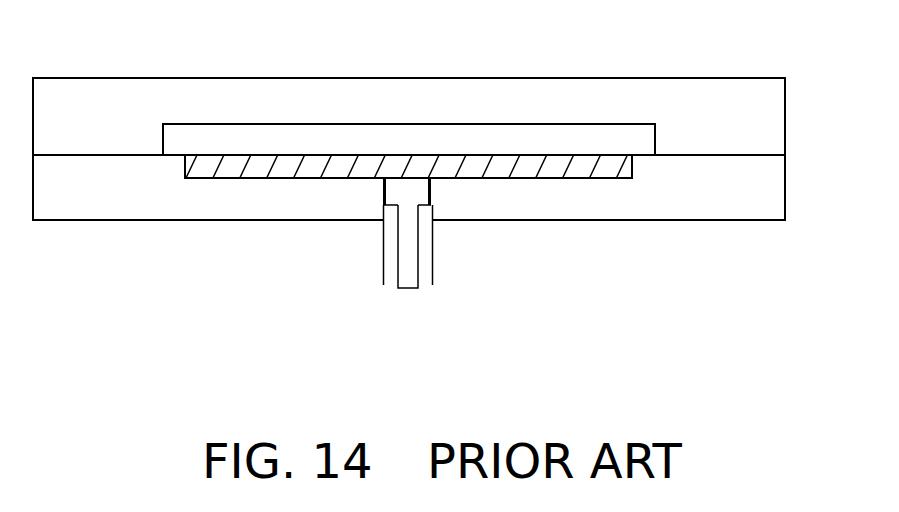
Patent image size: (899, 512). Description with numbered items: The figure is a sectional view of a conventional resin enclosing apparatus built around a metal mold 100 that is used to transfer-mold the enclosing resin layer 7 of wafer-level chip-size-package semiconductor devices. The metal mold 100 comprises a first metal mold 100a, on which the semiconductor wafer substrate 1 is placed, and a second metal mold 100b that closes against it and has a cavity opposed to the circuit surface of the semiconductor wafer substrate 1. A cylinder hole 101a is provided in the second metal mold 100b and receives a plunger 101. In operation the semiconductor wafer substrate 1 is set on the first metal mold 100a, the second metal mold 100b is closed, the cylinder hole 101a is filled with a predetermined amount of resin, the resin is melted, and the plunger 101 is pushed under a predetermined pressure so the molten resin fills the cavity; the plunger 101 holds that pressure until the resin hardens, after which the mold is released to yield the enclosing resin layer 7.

The semiconductor wafer substrate 1 is at (385, 140).
The enclosing resin layer 7 is at (548, 179).
The metal mold 100 is at (450, 156).
The first metal mold 100a is at (712, 79).
The second metal mold 100b is at (700, 221).
The plunger 101 is at (410, 272).
The cylinder hole 101a is at (431, 240).